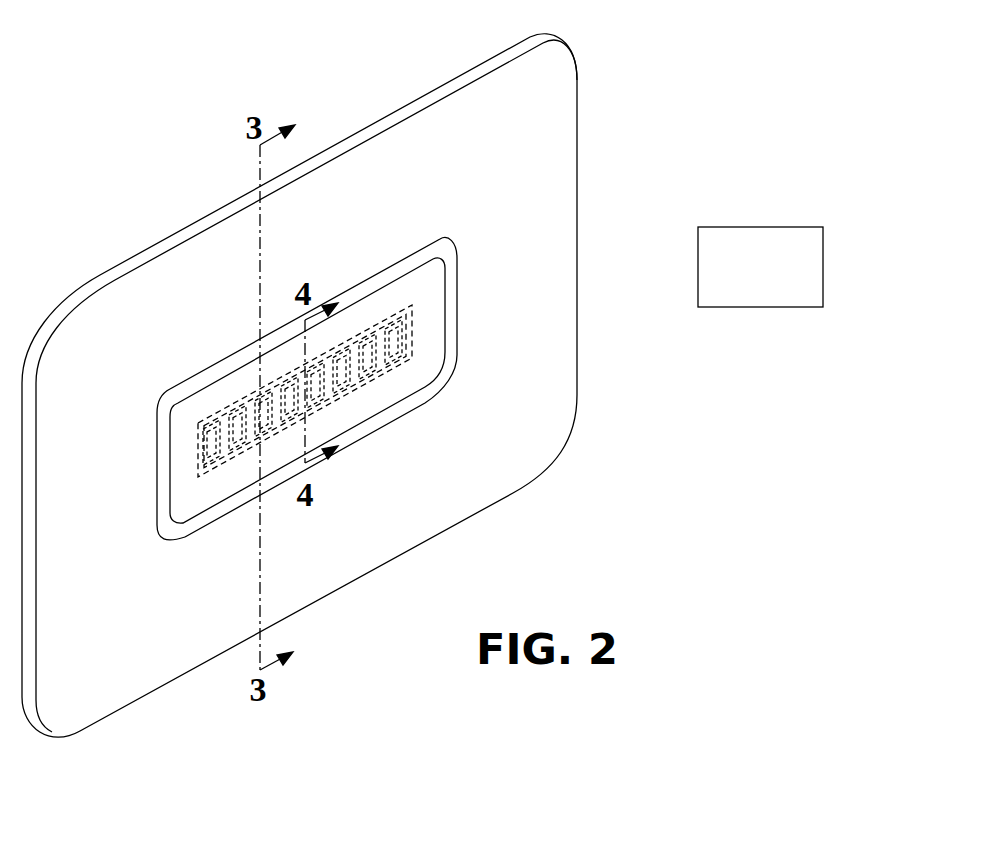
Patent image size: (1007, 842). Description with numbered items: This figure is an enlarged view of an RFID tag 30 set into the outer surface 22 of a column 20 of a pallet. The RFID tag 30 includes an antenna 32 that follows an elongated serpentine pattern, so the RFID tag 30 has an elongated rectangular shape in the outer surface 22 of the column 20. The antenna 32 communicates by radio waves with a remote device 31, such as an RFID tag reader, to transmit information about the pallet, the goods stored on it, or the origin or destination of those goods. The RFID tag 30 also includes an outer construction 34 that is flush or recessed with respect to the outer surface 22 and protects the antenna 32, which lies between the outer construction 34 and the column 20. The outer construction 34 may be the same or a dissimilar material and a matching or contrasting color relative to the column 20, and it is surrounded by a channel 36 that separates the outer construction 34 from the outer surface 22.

The column 20 is at (473, 498).
The outer surface 22 is at (552, 172).
The RFID tag 30 is at (168, 555).
The remote device 31 is at (823, 262).
The antenna 32 is at (407, 362).
The outer construction 34 is at (412, 380).
The channel 36 is at (397, 267).